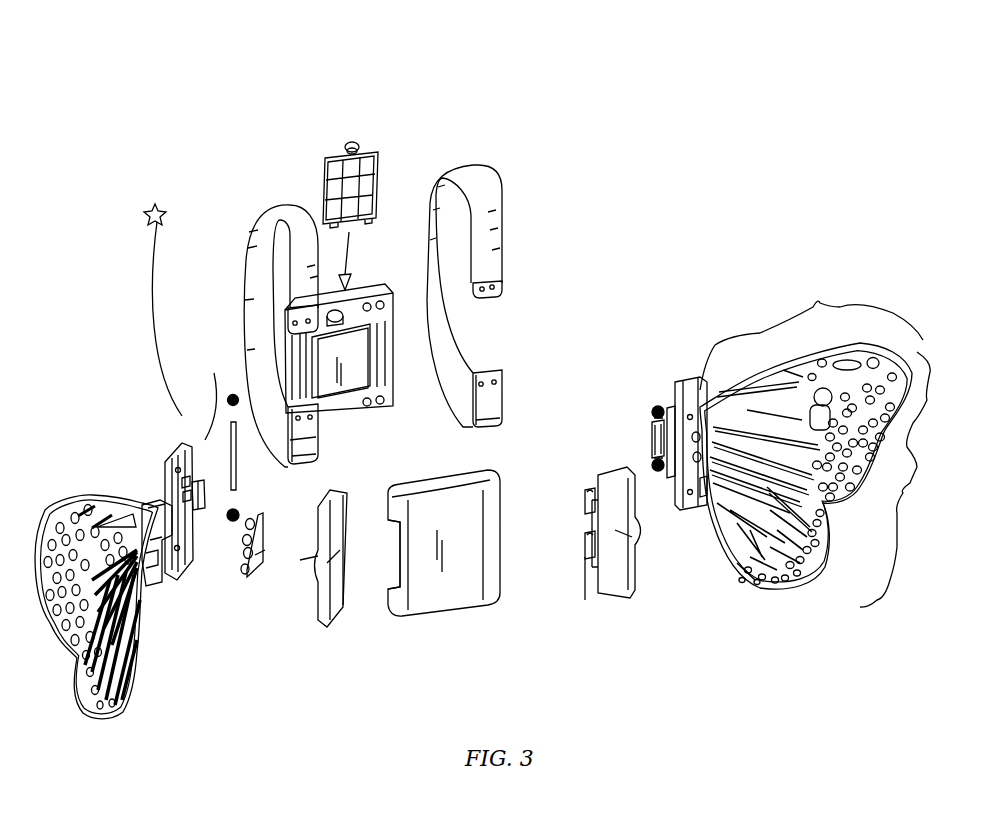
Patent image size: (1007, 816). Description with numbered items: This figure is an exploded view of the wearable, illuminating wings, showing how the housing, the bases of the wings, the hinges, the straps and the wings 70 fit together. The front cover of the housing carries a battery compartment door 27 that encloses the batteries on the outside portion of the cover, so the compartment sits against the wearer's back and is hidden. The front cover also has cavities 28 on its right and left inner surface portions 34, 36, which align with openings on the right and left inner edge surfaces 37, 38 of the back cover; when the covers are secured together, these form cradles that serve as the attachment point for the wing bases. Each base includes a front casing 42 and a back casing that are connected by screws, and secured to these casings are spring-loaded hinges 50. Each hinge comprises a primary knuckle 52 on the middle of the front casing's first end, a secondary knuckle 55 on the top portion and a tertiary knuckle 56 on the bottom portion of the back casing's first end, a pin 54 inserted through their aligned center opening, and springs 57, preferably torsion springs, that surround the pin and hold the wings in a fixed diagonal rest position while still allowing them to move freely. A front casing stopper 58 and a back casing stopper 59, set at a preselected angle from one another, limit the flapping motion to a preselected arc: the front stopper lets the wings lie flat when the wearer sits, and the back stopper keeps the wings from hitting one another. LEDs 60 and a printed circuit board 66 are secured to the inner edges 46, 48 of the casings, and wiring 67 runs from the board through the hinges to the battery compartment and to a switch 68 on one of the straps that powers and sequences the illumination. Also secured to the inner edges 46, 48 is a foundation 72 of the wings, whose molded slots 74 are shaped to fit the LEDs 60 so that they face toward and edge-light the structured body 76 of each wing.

The battery compartment door 27 is at (380, 152).
The cavities 28 is at (290, 367).
The right inner surface of the front cover 34 is at (398, 398).
The left inner surface of the front cover 36 is at (275, 418).
The right inner surface of the back cover 37 is at (496, 556).
The left inner surface of the back cover 38 is at (378, 585).
The front casing 42 is at (177, 455).
The inner portion of front casing 46 is at (150, 503).
The inner portion of back casing 48 is at (307, 581).
The spring-loaded hinges 50 is at (640, 405).
The primary knuckle 52 is at (195, 484).
The pin 54 is at (237, 465).
The secondary knuckle 55 is at (583, 500).
The tertiary knuckle 56 is at (585, 600).
The springs 57 is at (233, 394).
The front casing stopper 58 is at (673, 412).
The back casing stopper 59 is at (347, 548).
The LEDs 60 is at (250, 625).
The printed circuit board 66 is at (262, 560).
The wiring 67 is at (148, 314).
The switch 68 is at (160, 207).
The wings 70 is at (919, 480).
The foundation 72 is at (135, 500).
The slots 74 is at (148, 555).
The structured bodies 76 is at (820, 304).